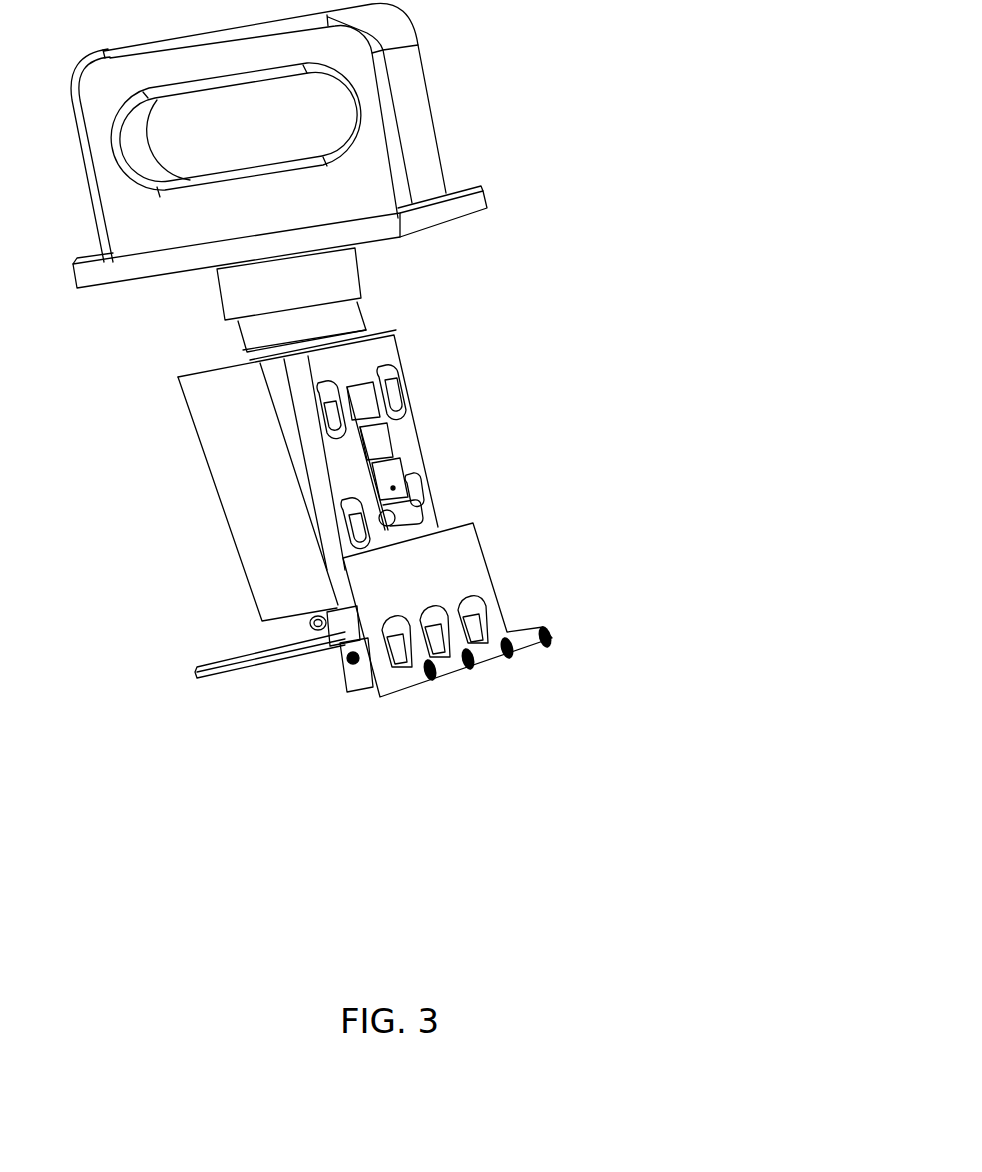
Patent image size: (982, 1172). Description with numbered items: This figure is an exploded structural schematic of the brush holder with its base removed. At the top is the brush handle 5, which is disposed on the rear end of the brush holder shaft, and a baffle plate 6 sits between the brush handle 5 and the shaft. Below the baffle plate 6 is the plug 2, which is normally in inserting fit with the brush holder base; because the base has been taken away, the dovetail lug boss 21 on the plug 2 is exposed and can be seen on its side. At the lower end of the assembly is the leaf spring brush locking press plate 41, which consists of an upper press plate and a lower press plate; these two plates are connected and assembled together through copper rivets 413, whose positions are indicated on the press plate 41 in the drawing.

The brush handle 5 is at (423, 148).
The baffle plate 6 is at (470, 208).
The plug 2 is at (407, 443).
The dovetail lug boss 21 is at (243, 463).
The leaf spring brush locking press plate 41 is at (458, 582).
The copper rivets 413 is at (353, 572).